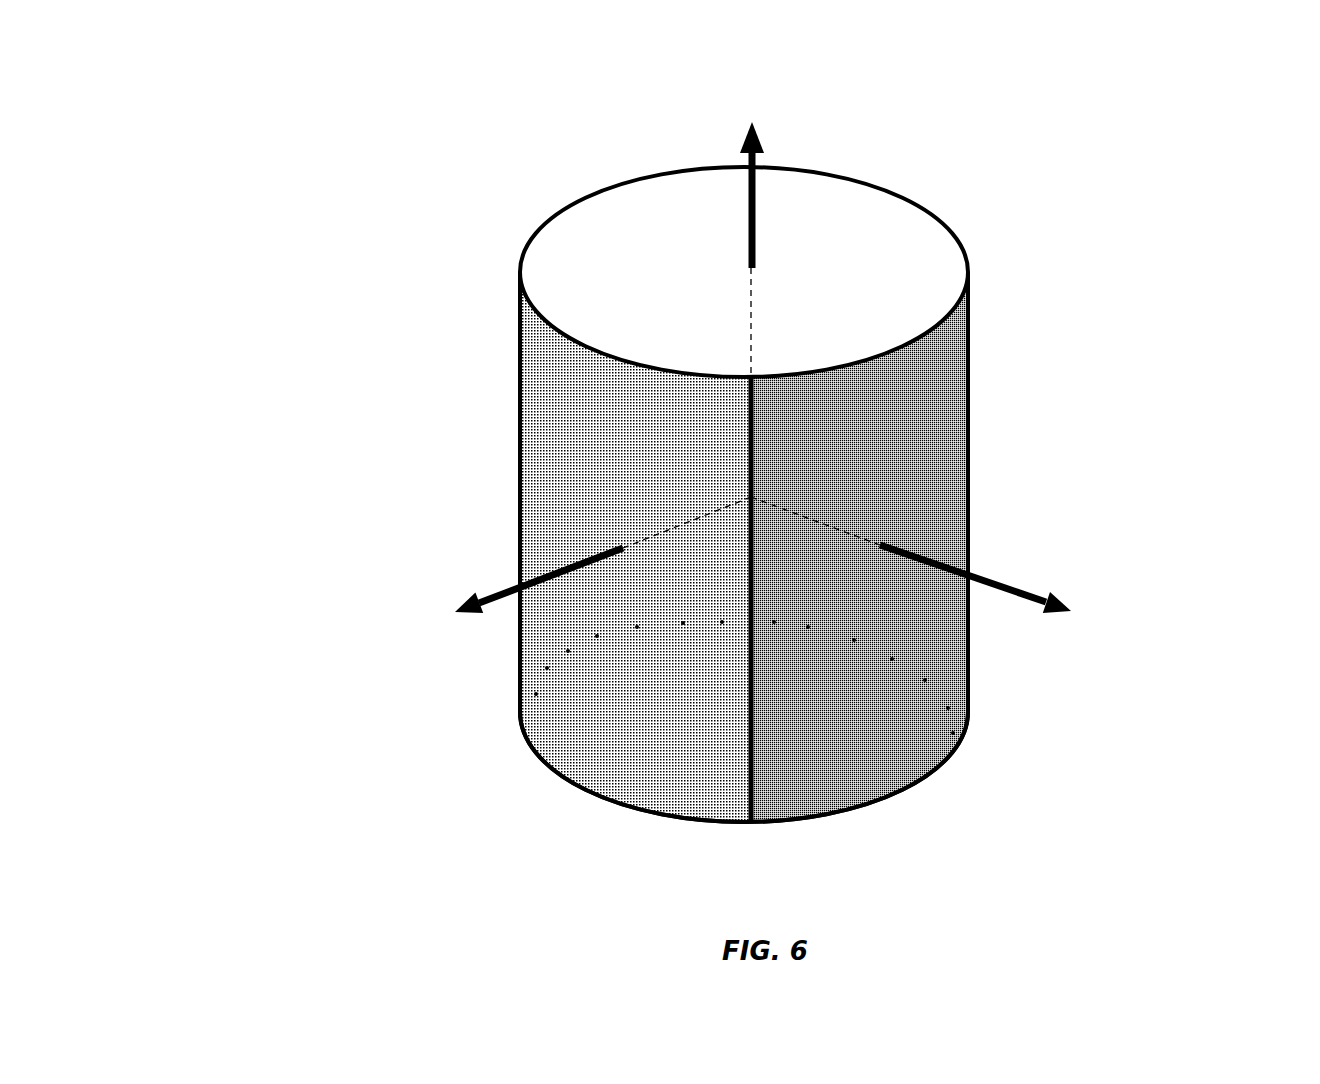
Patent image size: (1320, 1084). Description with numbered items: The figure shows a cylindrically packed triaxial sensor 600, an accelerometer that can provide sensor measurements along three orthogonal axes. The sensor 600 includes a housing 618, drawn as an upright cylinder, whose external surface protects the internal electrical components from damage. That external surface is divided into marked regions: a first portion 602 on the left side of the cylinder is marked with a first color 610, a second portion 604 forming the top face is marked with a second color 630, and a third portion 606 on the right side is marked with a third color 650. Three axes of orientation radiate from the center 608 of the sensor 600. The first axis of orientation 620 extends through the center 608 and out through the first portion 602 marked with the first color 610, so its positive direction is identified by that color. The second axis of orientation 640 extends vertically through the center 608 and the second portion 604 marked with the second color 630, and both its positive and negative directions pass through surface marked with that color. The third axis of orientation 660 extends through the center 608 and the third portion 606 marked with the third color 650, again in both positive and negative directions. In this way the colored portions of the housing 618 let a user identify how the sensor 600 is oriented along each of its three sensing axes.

The cylindrically packed triaxial sensor 600 is at (258, 120).
The first portion of the external surface 602 is at (578, 392).
The second portion of the external surface 604 is at (615, 244).
The third portion of the external surface 606 is at (936, 392).
The center 608 is at (753, 497).
The first color 610 is at (538, 445).
The housing 618 is at (520, 287).
The first axis of orientation 620 is at (452, 609).
The second color 630 is at (738, 158).
The second axis of orientation 640 is at (895, 263).
The third color 650 is at (964, 430).
The third axis of orientation 660 is at (1049, 624).